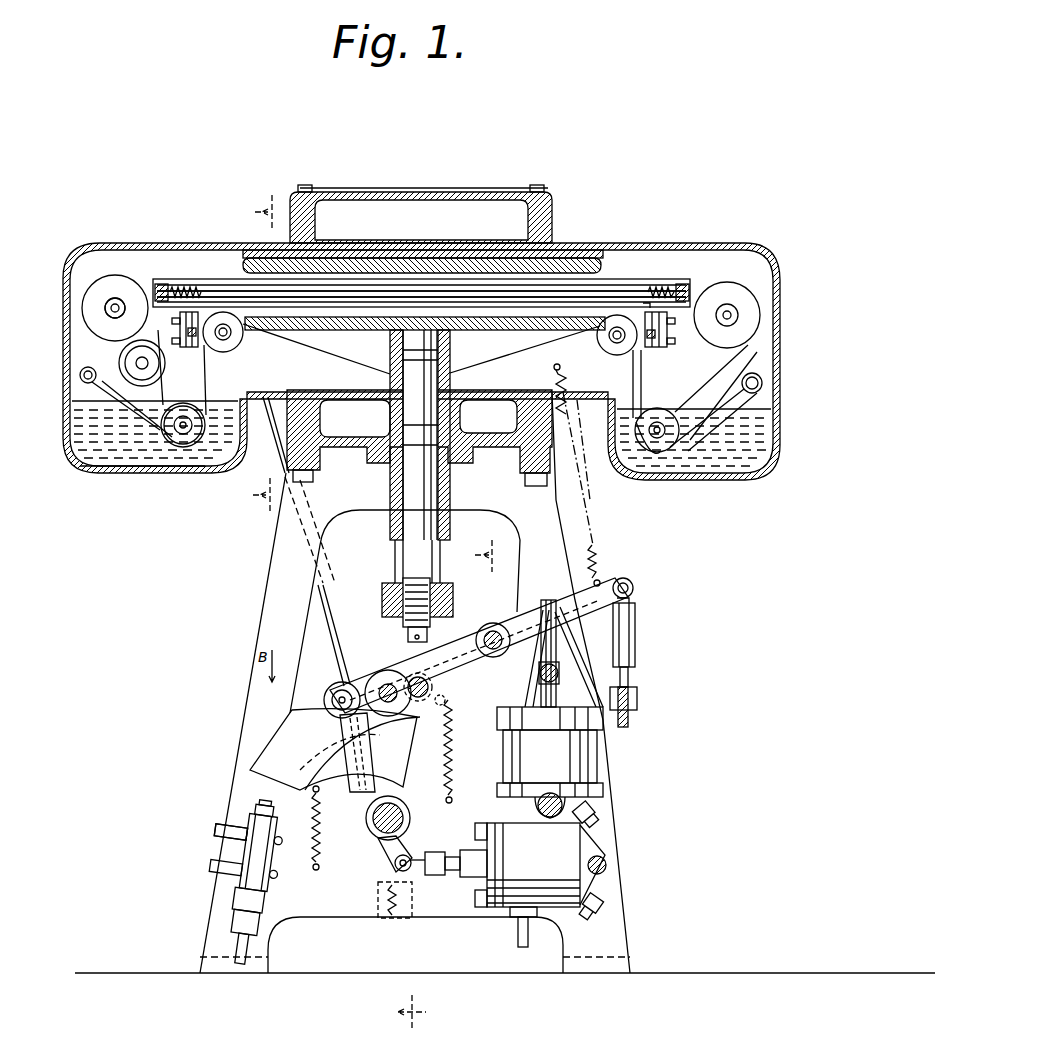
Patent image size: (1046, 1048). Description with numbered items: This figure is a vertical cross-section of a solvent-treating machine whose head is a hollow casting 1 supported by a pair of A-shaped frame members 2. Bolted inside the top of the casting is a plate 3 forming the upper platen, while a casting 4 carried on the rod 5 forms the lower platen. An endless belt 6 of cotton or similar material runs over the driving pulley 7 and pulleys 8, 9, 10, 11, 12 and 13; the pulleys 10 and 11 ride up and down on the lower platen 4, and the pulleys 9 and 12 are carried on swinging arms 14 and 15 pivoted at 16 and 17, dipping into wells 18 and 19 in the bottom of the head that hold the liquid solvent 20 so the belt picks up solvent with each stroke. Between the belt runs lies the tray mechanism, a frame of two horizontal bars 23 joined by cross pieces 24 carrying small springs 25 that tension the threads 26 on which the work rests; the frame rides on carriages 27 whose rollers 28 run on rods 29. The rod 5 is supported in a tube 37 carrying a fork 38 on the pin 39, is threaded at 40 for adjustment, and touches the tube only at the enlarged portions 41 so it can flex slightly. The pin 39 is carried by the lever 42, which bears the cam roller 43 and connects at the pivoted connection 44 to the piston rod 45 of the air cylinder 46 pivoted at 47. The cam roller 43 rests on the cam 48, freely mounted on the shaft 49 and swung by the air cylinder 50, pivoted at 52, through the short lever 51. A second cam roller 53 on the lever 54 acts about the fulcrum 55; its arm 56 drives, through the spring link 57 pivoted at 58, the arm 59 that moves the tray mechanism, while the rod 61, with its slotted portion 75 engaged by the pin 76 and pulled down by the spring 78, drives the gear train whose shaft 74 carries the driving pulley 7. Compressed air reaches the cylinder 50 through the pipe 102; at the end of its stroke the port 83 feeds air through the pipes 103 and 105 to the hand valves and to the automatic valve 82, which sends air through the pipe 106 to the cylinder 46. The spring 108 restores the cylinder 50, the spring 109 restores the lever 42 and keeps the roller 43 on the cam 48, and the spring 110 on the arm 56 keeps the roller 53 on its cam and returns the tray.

The hollow casting 1 is at (66, 342).
The A-shaped frame members 2 is at (276, 550).
The plate 3 is at (350, 250).
The casting 4 is at (272, 327).
The rod 5 is at (422, 382).
The endless belt 6 is at (243, 253).
The driving pulley 7 is at (97, 290).
The pulley 8 is at (745, 305).
The pulley 9 is at (640, 450).
The pulley 10 is at (613, 350).
The pulley 11 is at (223, 348).
The pulley 12 is at (190, 447).
The pulley 13 is at (130, 358).
The swinging arm 14 is at (771, 402).
The swinging arm 15 is at (72, 401).
The pivot 16 is at (763, 383).
The pivot 17 is at (80, 376).
The well 18 is at (662, 455).
The well 19 is at (116, 468).
The liquid solvent 20 is at (150, 455).
The horizontal bars 23 is at (350, 307).
The cross pieces 24 is at (162, 284).
The small springs 25 is at (186, 290).
The threads 26 is at (318, 308).
The carriages 27 is at (192, 348).
The rollers 28 is at (184, 346).
The rods 29 is at (188, 332).
The tube 37 is at (399, 568).
The fork 38 is at (405, 633).
The pin 39 is at (422, 700).
The threaded portion 40 is at (440, 597).
The enlarged portions 41 is at (372, 420).
The lever 42 is at (475, 702).
The cam roller 43 is at (390, 728).
The pivoted connection 44 is at (562, 672).
The piston rod 45 is at (556, 640).
The air cylinder 46 is at (595, 750).
The pivot 47 is at (538, 808).
The cam 48 is at (300, 718).
The shaft 49 is at (404, 818).
The air cylinder 50 is at (565, 906).
The short lever 51 is at (395, 862).
The pivot 52 is at (606, 865).
The cam roller 53 is at (330, 690).
The lever 54 is at (380, 680).
The fulcrum 55 is at (492, 623).
The arm 56 is at (597, 577).
The spring link 57 is at (636, 625).
The pivot 58 is at (633, 588).
The arm 59 is at (630, 714).
The rod 61 is at (327, 615).
The shaft 74 is at (105, 309).
The slotted portion 75 is at (310, 771).
The pin 76 is at (345, 737).
The spring 78 is at (378, 904).
The automatic valve 82 is at (245, 850).
The port 83 is at (510, 915).
The pipe 102 is at (605, 900).
The pipe 103 is at (520, 940).
The pipe 105 is at (218, 832).
The pipe 106 is at (592, 812).
The spring 108 is at (319, 826).
The spring 109 is at (446, 775).
The spring 110 is at (586, 535).